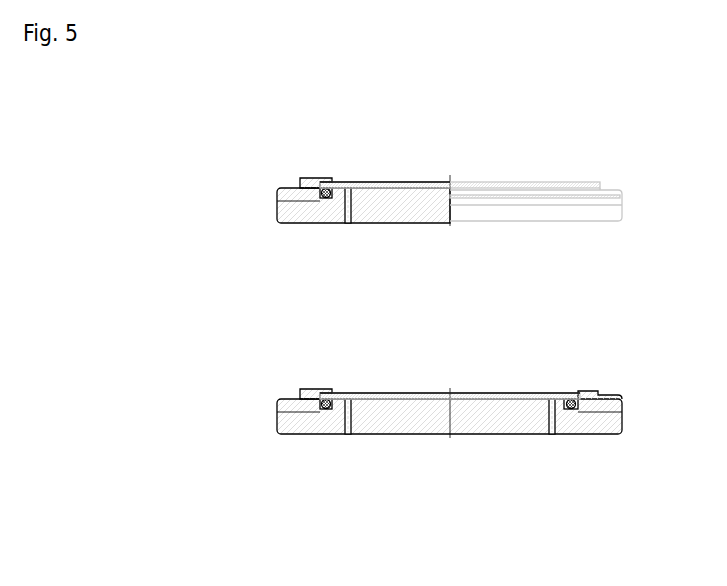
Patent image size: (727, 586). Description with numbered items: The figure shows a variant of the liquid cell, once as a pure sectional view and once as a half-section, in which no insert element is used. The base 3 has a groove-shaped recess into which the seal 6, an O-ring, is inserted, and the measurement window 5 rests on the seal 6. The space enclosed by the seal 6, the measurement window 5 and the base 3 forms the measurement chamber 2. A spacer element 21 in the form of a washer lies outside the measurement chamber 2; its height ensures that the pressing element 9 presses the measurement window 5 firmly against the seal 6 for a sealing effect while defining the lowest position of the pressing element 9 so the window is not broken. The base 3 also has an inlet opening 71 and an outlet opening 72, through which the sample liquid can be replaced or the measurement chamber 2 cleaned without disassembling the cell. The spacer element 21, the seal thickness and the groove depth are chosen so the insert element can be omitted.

The measurement chamber 2 is at (420, 188).
The base 3 is at (405, 205).
The measurement window 5 is at (393, 182).
The seal 6 is at (325, 196).
The pressing element 9 is at (306, 187).
The spacer element 21 is at (318, 201).
The inlet opening 71 is at (349, 212).
The outlet opening 72 is at (552, 422).